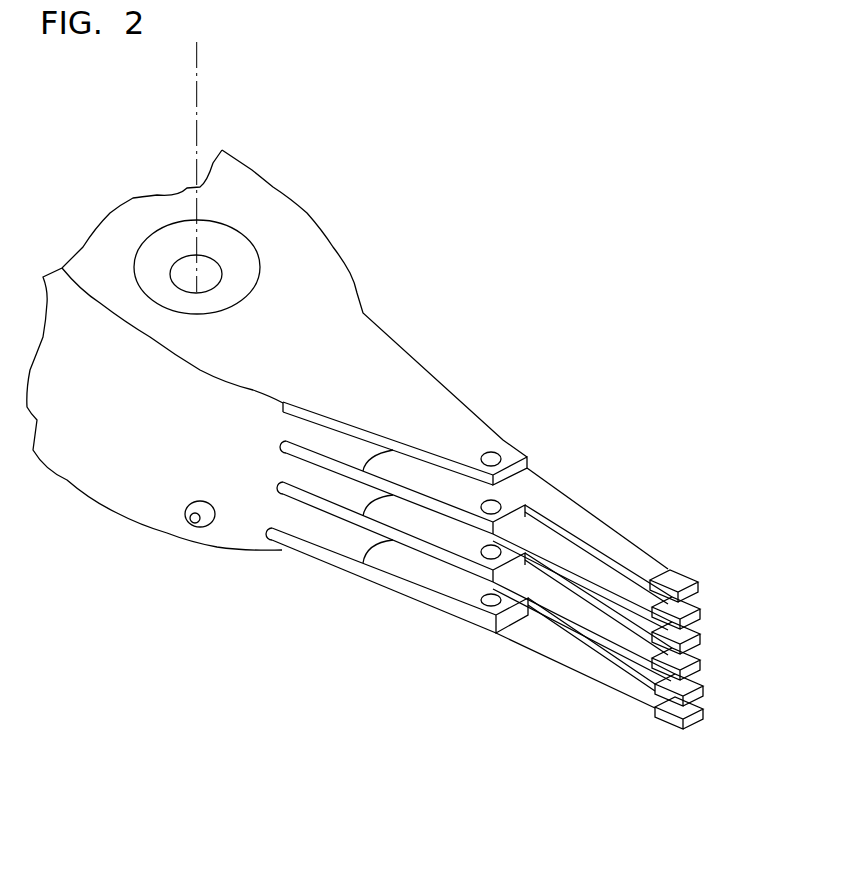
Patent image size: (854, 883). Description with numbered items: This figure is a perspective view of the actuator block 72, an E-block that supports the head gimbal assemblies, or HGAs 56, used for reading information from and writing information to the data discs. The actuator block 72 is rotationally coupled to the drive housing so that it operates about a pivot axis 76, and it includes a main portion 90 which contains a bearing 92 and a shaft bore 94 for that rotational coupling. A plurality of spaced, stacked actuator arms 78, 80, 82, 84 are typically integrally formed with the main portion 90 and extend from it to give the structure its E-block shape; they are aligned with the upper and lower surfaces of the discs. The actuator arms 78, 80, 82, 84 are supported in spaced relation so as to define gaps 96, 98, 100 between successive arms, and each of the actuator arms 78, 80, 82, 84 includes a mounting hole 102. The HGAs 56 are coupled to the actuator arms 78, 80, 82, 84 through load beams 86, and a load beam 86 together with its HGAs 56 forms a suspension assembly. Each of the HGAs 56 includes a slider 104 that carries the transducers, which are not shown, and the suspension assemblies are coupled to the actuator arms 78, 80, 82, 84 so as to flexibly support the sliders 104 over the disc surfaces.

The HGA 56 is at (656, 600).
The actuator block 72 is at (495, 317).
The pivot axis 76 is at (197, 137).
The actuator arm 78 is at (432, 422).
The actuator arm 80 is at (440, 500).
The actuator arm 82 is at (448, 551).
The actuator arm 84 is at (450, 600).
The load beam 86 is at (588, 645).
The main portion 90 is at (333, 297).
The bearing 92 is at (240, 231).
The shaft bore 94 is at (201, 277).
The gap 96 is at (420, 477).
The gap 98 is at (407, 520).
The gap 100 is at (418, 567).
The mounting hole 102 is at (503, 442).
The slider 104 is at (700, 583).